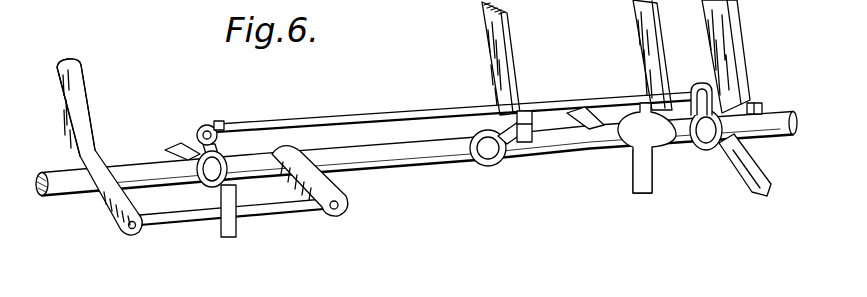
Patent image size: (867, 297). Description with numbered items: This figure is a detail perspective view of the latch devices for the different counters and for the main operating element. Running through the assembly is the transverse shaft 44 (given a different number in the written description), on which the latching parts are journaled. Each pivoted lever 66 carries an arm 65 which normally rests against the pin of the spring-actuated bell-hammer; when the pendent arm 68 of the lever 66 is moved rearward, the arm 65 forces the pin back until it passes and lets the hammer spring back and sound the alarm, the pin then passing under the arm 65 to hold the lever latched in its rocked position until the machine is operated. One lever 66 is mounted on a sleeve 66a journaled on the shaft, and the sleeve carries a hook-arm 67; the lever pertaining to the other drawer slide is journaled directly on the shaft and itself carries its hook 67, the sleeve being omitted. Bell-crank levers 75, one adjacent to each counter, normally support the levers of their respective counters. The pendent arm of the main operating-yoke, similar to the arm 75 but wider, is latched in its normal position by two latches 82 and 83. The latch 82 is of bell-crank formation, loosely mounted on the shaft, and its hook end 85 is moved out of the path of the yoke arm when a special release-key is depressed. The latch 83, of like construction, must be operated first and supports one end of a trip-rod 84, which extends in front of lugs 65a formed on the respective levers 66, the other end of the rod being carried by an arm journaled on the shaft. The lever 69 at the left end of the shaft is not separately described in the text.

The shaft 44 is at (578, 190).
The arm 65 is at (177, 148).
The collar 65a is at (222, 122).
The pivoted lever 66 is at (198, 128).
The sleeve 66a is at (410, 170).
The hook-arm 67 is at (522, 152).
The pendent arm 68 is at (72, 97).
The lever 69 is at (115, 214).
The bell-crank lever 75 is at (492, 52).
The latch 82 is at (733, 139).
The latch 83 is at (716, 98).
The trip-rod 84 is at (398, 118).
The hook end 85 is at (756, 104).